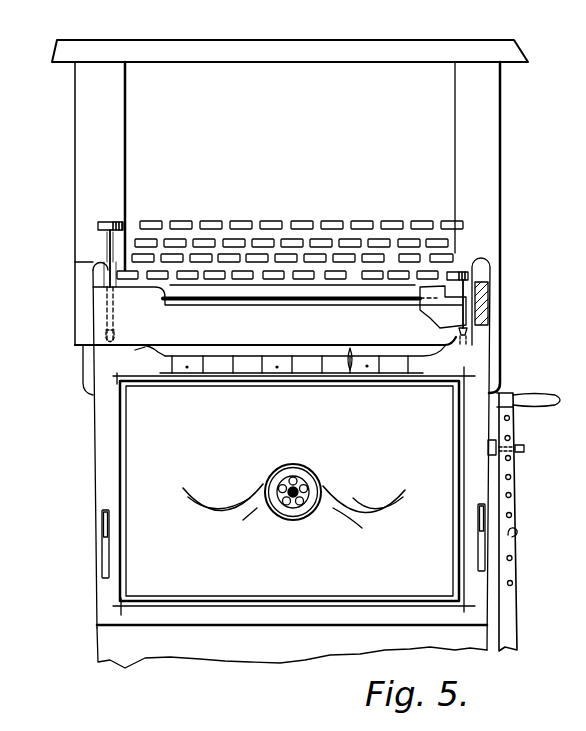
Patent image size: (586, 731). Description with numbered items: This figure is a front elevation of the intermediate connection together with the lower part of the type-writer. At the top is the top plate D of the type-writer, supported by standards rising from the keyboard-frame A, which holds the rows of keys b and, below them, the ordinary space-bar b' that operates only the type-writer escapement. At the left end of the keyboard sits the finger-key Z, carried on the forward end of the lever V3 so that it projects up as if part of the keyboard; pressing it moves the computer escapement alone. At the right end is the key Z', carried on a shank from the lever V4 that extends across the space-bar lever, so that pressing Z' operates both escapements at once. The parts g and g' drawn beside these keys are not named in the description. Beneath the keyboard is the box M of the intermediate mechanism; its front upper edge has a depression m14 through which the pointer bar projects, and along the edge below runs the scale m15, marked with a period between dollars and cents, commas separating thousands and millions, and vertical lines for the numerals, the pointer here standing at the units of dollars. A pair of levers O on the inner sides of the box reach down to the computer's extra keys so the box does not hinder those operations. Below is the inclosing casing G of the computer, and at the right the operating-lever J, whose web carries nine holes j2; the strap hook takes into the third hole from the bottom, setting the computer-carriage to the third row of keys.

The top plate D is at (412, 53).
The keyboard-frame A is at (270, 445).
The keys b is at (290, 238).
The space-bar b' is at (300, 310).
The finger-key Z is at (108, 269).
The key Z' is at (466, 284).
The key rod g is at (70, 286).
The key slide g' is at (501, 303).
The lever V3 is at (125, 356).
The lever V4 is at (465, 348).
The depression m14 is at (140, 347).
The scale m15 is at (308, 370).
The box M is at (294, 491).
The levers O is at (101, 524).
The inclosing casing G is at (292, 646).
The operating-lever J is at (515, 607).
The holes j2 is at (515, 558).